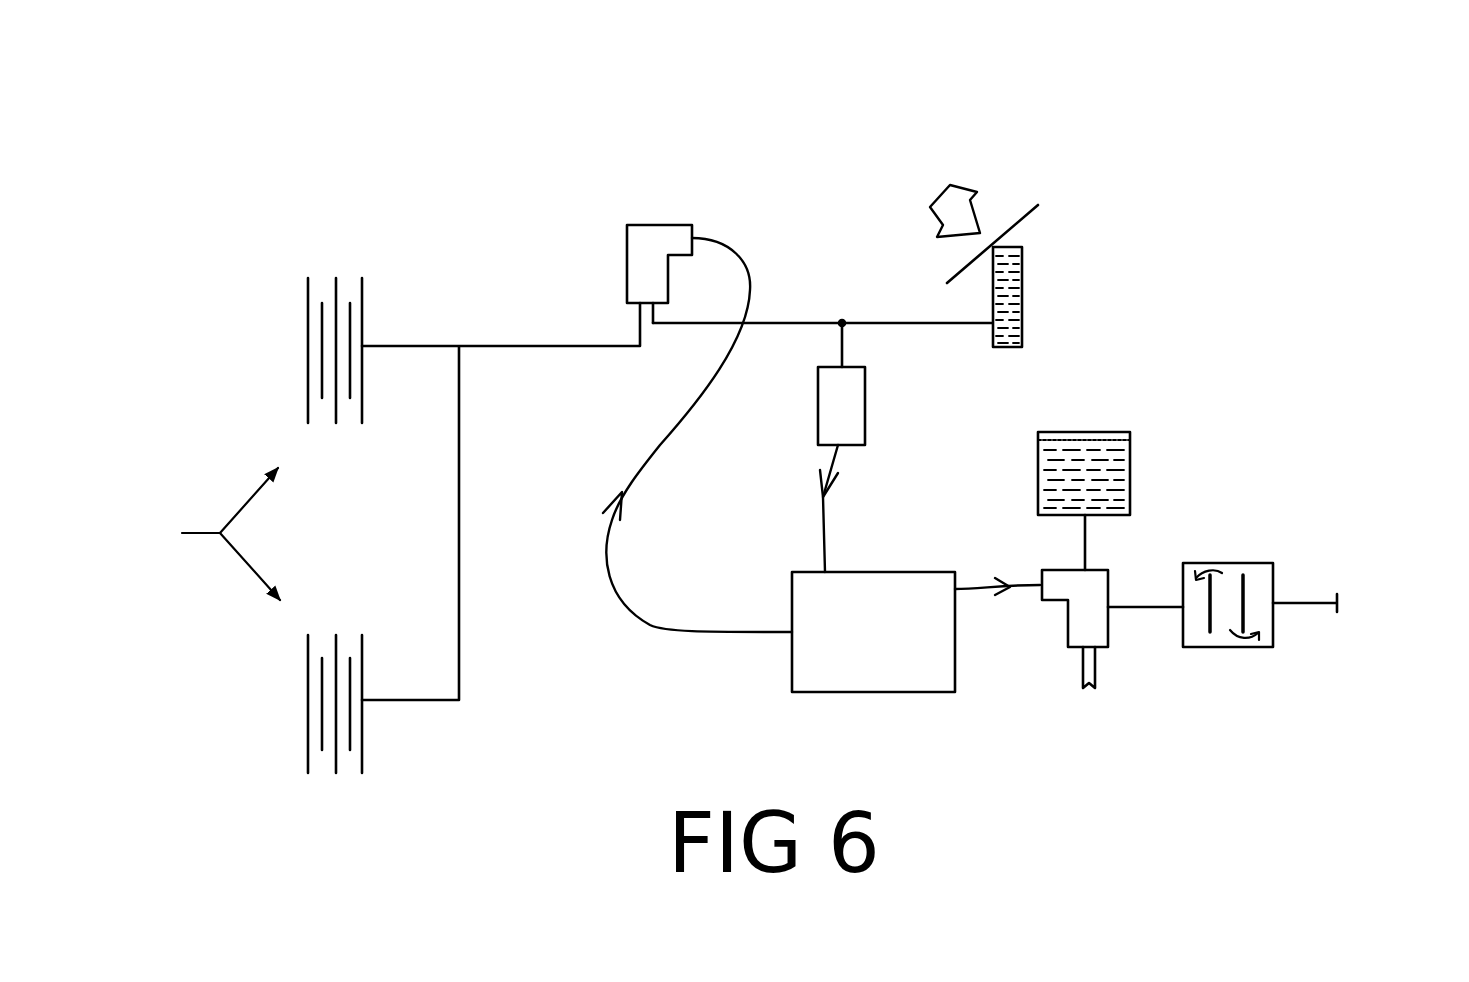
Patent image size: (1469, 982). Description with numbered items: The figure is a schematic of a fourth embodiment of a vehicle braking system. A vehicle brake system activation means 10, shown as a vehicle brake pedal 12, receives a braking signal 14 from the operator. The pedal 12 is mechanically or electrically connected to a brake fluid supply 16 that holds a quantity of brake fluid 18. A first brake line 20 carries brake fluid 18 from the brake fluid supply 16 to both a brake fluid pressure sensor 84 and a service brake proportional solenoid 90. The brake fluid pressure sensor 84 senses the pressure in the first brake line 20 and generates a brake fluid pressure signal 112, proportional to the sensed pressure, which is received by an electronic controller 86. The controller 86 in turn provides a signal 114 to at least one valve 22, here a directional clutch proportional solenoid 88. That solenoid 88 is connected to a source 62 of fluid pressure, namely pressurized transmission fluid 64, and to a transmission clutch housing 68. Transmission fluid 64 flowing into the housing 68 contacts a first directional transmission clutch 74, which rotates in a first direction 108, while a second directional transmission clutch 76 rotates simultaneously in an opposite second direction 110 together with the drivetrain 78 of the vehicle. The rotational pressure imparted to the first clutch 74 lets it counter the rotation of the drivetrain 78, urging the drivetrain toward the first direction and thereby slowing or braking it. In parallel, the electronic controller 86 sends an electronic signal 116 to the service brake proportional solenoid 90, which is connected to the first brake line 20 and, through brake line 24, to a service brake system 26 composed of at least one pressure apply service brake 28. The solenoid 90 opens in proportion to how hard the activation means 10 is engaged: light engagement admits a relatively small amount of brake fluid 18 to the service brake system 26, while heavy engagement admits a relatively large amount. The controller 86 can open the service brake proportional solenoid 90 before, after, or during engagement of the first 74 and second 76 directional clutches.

The vehicle brake system activation means 10 is at (1033, 157).
The vehicle brake pedal 12 is at (1038, 205).
The braking signal 14 is at (932, 206).
The brake fluid supply 16 is at (1013, 247).
The brake fluid 18 is at (1012, 298).
The first brake line 20 is at (910, 322).
The valve 22 is at (1080, 735).
The brake line 24 is at (508, 346).
The service brake system 26 is at (213, 534).
The pressure apply service brake 28 is at (356, 262).
The source for fluid pressure 62 is at (1130, 436).
The transmission fluid 64 is at (1130, 480).
The transmission clutch housing 68 is at (1262, 633).
The first directional transmission clutch 74 is at (1208, 612).
The second directional transmission clutch 76 is at (1253, 590).
The drivetrain 78 is at (1352, 602).
The brake fluid pressure sensor 84 is at (865, 398).
The electronic controller 86 is at (895, 571).
The directional clutch proportional solenoid 88 is at (1065, 630).
The service brake proportional solenoid 90 is at (642, 224).
The first direction 108 is at (1217, 563).
The second direction 110 is at (1243, 650).
The brake fluid pressure signal 112 is at (805, 508).
The signal 114 is at (1003, 568).
The electronic signal 116 is at (610, 510).